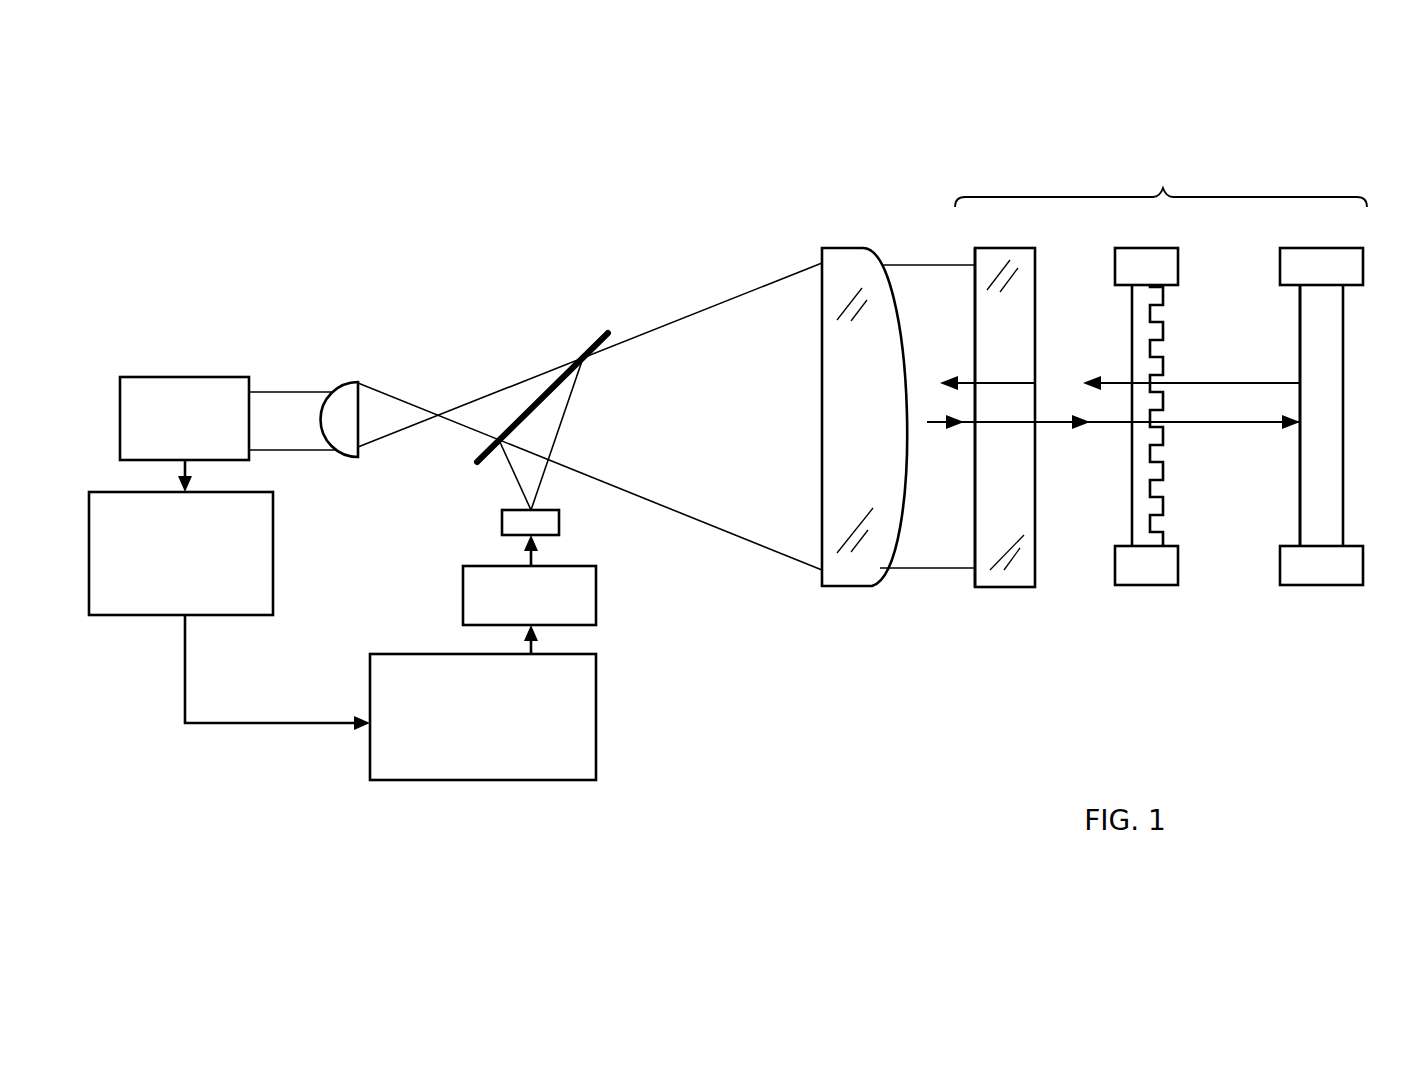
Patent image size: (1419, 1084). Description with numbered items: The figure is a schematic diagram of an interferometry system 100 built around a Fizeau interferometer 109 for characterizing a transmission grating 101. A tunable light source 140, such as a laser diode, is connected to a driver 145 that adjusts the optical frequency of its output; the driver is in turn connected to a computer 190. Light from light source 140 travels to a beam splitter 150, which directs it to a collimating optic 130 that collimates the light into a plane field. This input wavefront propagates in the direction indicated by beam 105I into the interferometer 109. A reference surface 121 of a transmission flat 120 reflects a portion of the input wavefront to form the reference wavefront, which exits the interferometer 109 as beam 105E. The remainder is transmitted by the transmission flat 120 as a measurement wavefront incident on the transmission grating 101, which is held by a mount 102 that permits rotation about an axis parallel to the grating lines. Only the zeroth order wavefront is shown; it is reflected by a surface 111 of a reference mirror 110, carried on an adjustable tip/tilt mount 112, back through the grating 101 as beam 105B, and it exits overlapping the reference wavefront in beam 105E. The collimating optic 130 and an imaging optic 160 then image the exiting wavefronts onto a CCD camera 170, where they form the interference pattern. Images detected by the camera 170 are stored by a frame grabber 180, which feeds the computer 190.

The interferometry system 100 is at (893, 672).
The transmission grating 101 is at (1132, 340).
The mount 102 is at (1140, 248).
The beam 105B is at (1223, 383).
The beam 105E is at (960, 378).
The beam 105I is at (1065, 424).
The Fizeau interferometer 109 is at (1161, 180).
The reference mirror 110 is at (1343, 360).
The surface 111 is at (1300, 487).
The tip/tilt mount 112 is at (1318, 248).
The transmission flat 120 is at (995, 588).
The reference surface 121 is at (980, 555).
The collimating optic 130 is at (828, 248).
The tunable light source 140 is at (502, 527).
The driver 145 is at (505, 609).
The beam splitter 150 is at (540, 395).
The imaging optic 160 is at (360, 382).
The CCD camera 170 is at (162, 428).
The frame grabber 180 is at (162, 560).
The computer 190 is at (474, 730).